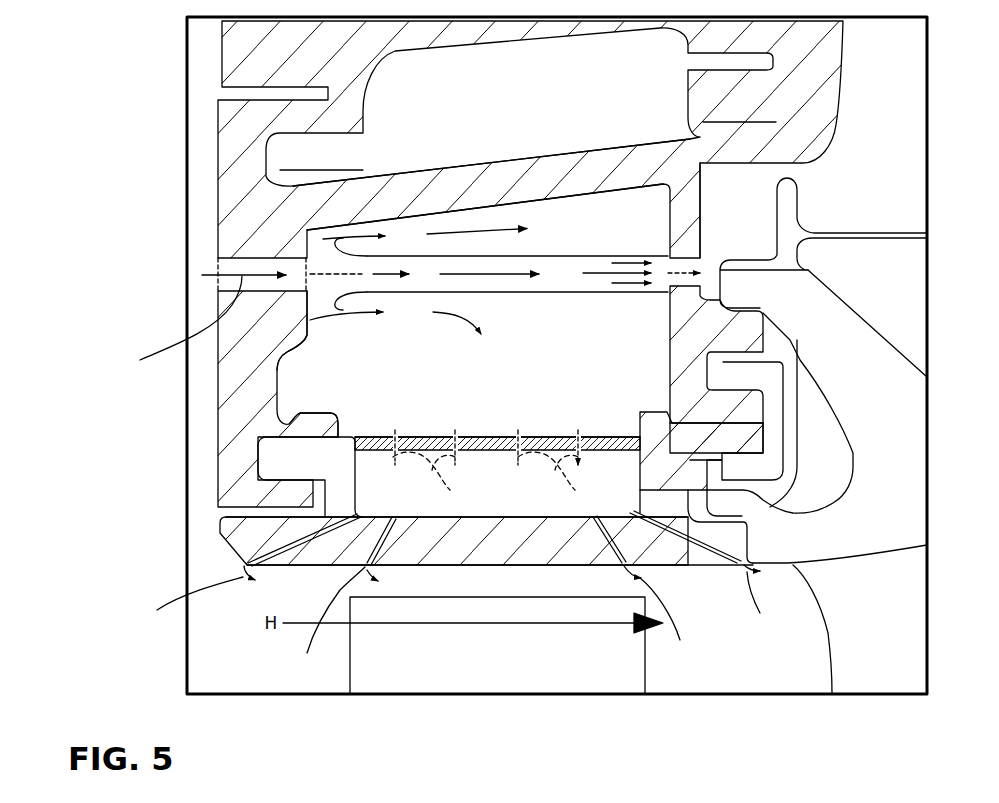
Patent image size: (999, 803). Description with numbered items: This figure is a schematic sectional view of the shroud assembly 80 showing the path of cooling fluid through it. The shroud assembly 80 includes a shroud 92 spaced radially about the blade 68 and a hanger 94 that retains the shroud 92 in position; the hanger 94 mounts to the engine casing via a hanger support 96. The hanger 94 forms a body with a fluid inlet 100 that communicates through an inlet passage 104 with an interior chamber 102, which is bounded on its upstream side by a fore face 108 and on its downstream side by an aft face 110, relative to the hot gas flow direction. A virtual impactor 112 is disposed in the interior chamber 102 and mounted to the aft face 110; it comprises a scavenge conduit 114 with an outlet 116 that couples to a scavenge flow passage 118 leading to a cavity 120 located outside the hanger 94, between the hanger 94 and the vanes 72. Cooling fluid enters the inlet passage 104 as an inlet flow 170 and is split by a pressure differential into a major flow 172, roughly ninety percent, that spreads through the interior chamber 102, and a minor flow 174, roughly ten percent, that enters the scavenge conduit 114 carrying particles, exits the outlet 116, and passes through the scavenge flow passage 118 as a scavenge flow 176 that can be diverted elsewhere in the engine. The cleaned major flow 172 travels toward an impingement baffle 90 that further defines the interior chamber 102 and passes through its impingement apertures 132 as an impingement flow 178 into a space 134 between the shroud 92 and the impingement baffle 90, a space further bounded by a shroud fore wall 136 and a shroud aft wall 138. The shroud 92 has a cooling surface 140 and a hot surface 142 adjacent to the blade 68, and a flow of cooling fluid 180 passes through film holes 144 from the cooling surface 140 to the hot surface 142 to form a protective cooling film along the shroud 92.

The shroud assembly 80 is at (183, 106).
The hanger support 96 is at (840, 70).
The hanger 94 is at (218, 403).
The fore face 108 is at (307, 343).
The inlet passage 104 is at (305, 272).
The fluid inlet 100 is at (258, 262).
The inlet flow 170 is at (174, 325).
The major flow 172 is at (373, 238).
The minor flow 174 is at (394, 270).
The virtual impactor 112 is at (482, 255).
The scavenge conduit 114 is at (574, 282).
The outlet 116 is at (661, 258).
The cavity 120 is at (746, 211).
The aft face 110 is at (667, 337).
The scavenge flow passage 118 is at (720, 250).
The scavenge flow 176 is at (707, 299).
The shroud aft wall 138 is at (640, 470).
The impingement baffle 90 is at (487, 437).
The interior chamber 102 is at (514, 385).
The impingement apertures 132 is at (457, 436).
The impingement flow 178 is at (495, 415).
The shroud fore wall 136 is at (355, 470).
The space 134 is at (380, 504).
The shroud 92 is at (220, 528).
The cooling surface 140 is at (433, 505).
The hot surface 142 is at (467, 565).
The film holes 144 is at (367, 547).
The flow of cooling fluid 180 is at (463, 620).
The blade 68 is at (499, 681).
The vanes 72 is at (876, 633).